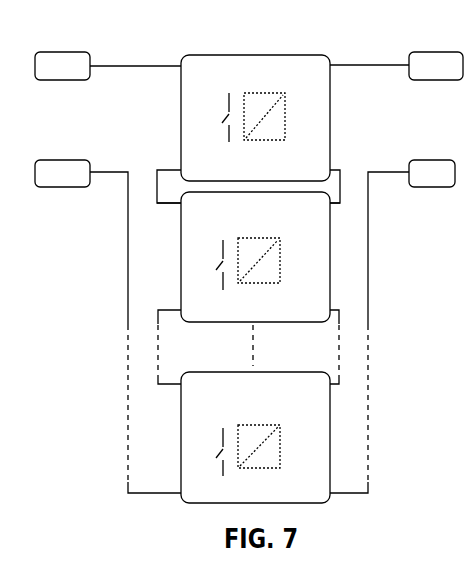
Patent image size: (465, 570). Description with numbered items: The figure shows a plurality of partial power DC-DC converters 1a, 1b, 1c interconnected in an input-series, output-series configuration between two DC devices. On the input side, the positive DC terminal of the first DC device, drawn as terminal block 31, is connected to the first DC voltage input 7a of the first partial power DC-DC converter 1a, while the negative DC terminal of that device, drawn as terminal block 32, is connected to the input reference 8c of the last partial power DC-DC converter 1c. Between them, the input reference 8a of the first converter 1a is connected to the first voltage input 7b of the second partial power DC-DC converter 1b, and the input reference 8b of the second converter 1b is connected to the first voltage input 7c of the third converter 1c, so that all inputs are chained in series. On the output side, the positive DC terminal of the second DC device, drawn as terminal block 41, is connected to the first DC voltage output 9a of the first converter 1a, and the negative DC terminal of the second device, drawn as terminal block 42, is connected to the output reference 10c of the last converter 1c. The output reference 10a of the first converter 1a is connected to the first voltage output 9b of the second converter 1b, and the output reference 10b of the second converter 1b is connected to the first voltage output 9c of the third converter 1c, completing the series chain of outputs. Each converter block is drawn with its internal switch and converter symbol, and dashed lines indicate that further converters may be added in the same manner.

The first partial power DC-DC converter 1a is at (255, 118).
The second partial power DC-DC converter 1b is at (255, 257).
The third partial power DC-DC converter 1c is at (255, 437).
The first DC voltage input 7a is at (127, 64).
The first voltage input 7b is at (163, 205).
The first voltage input 7c is at (170, 386).
The input reference 8a is at (167, 168).
The input reference 8b is at (168, 309).
The input reference 8c is at (154, 492).
The first DC voltage output 9a is at (349, 63).
The first voltage output 9b is at (341, 205).
The first voltage output 9c is at (340, 386).
The output reference 10a is at (340, 170).
The output reference 10b is at (338, 309).
The output reference 10c is at (343, 492).
The first external terminal 31 is at (62, 66).
The second external terminal 32 is at (81, 321).
The third external terminal 41 is at (436, 66).
The fourth external terminal 42 is at (411, 321).